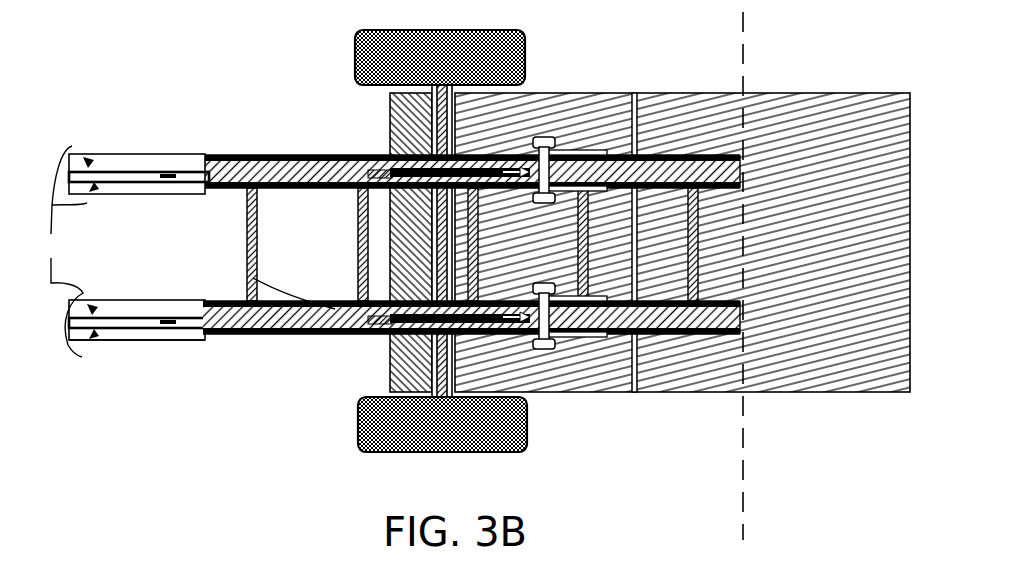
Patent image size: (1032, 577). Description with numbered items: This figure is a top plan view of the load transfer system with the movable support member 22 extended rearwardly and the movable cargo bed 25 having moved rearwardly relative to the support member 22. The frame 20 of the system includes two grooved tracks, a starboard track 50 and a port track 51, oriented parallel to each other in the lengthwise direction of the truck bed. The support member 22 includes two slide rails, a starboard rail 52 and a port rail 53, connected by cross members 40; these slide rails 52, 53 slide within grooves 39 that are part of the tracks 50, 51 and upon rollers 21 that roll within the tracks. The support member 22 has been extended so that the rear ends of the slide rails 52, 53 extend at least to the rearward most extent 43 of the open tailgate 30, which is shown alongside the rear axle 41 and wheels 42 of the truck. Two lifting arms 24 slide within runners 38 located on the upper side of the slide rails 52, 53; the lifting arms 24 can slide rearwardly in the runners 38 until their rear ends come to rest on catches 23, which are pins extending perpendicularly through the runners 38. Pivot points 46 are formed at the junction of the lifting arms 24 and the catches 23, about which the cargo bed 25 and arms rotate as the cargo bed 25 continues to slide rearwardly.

The frame 20 is at (140, 168).
The rollers 21 is at (170, 172).
The movable support member 22 is at (320, 190).
The catches 23 is at (556, 287).
The lifting arms 24 is at (340, 158).
The movable cargo bed 25 is at (798, 98).
The tailgate 30 is at (680, 353).
The runners 38 is at (200, 300).
The grooves 39 is at (66, 251).
The cross members 40 is at (247, 252).
The rear axle 41 is at (448, 363).
The wheels 42 is at (523, 57).
The rearward most extent 43 is at (717, 494).
The pivot points 46 is at (510, 317).
The starboard track 50 is at (92, 190).
The port track 51 is at (92, 338).
The starboard rail 52 is at (252, 156).
The port rail 53 is at (267, 340).